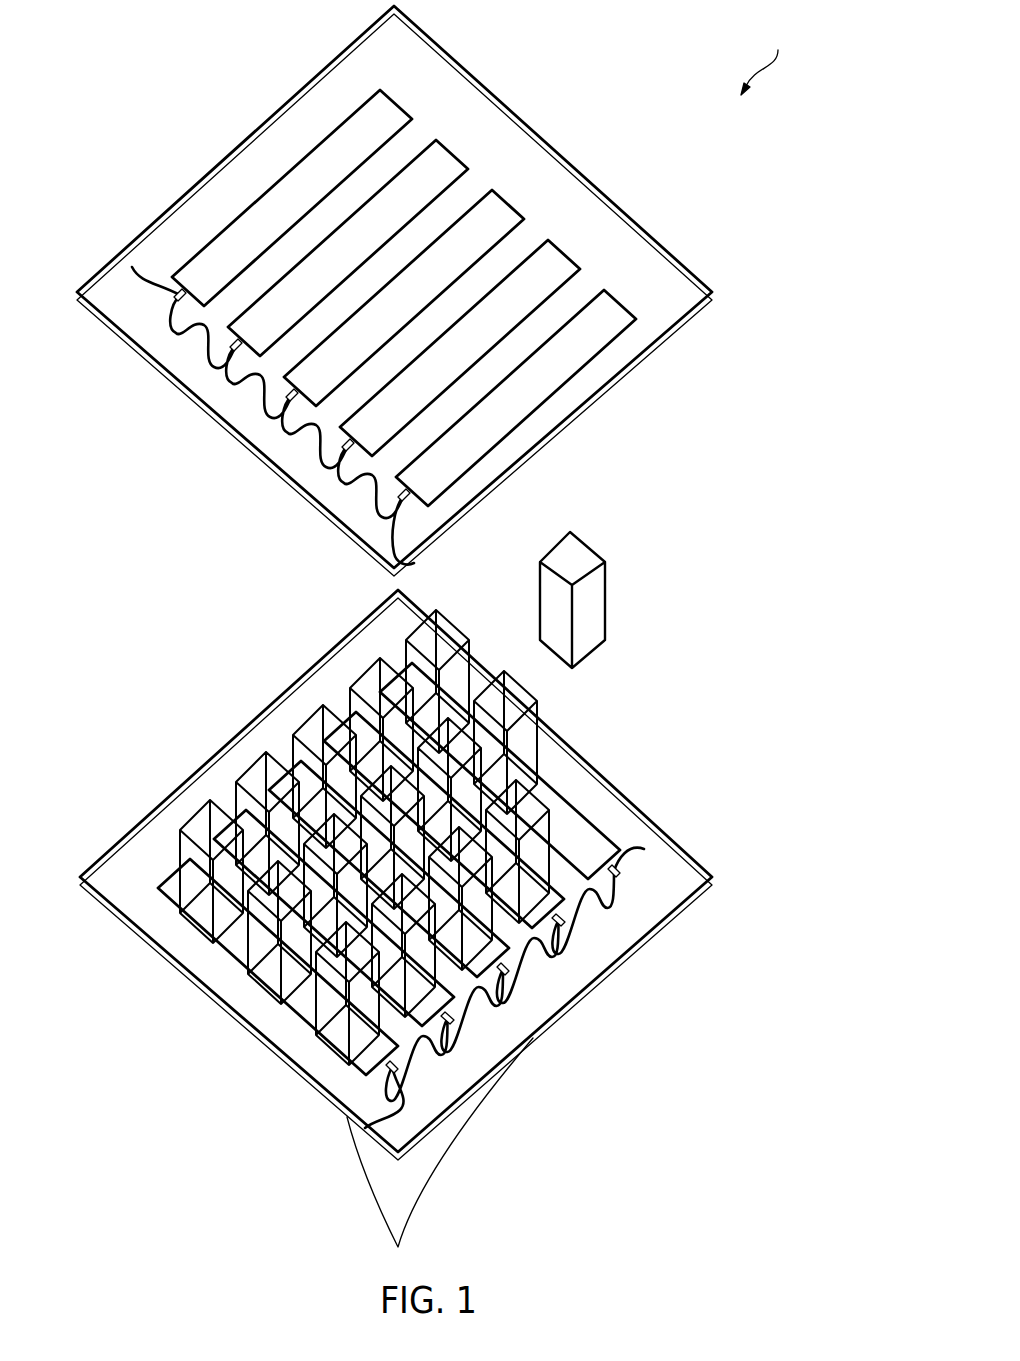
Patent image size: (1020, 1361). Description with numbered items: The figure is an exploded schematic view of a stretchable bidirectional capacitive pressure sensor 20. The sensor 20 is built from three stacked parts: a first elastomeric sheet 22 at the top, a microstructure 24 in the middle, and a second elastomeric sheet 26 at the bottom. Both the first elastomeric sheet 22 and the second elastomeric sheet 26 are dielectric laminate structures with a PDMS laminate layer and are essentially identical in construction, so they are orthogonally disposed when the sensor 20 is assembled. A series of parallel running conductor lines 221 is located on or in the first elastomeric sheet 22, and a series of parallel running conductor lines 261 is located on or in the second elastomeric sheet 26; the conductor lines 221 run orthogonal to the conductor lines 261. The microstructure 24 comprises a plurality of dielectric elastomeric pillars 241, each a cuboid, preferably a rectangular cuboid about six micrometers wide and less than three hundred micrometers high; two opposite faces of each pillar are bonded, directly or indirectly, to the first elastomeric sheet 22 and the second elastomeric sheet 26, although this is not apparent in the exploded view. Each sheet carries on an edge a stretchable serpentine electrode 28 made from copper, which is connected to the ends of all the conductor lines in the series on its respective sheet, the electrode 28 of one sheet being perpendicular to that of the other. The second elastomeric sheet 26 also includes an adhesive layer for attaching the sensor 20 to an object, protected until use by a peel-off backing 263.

The stretchable bidirectional capacitive pressure sensor 20 is at (769, 57).
The first elastomeric sheet 22 is at (412, 60).
The conductor lines 221 is at (340, 152).
The microstructure 24 is at (265, 945).
The elastomeric pillars 241 is at (588, 603).
The second elastomeric sheet 26 is at (145, 853).
The conductor lines 261 is at (587, 843).
The peel-off backing 263 is at (407, 1185).
The serpentine electrode 28 is at (210, 368).